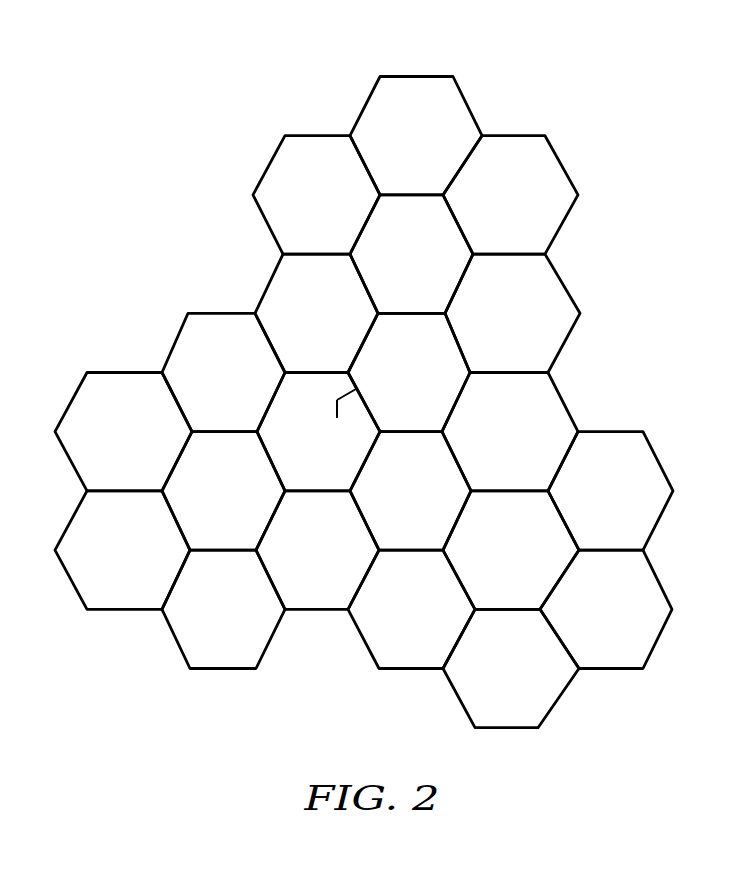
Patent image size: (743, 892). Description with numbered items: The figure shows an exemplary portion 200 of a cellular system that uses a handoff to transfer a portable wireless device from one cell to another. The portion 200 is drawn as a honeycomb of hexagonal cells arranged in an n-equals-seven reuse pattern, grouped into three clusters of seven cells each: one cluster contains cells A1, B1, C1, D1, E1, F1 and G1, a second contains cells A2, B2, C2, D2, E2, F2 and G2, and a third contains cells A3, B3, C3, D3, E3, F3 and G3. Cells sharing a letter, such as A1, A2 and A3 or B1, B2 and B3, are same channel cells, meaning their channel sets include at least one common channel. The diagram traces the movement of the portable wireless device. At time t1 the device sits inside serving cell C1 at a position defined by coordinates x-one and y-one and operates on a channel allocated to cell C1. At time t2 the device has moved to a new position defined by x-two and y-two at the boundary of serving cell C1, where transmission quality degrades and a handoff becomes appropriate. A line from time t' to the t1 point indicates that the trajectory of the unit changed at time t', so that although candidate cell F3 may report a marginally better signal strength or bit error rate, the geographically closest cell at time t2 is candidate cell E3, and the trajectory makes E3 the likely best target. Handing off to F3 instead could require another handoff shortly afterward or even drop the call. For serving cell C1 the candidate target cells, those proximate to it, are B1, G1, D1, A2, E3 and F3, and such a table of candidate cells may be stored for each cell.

The exemplary portion of a cellular system 200 is at (373, 383).
The time t' is at (239, 294).
The time t1 is at (319, 428).
The time t2 is at (402, 378).
The cell A1 is at (123, 432).
The cell B1 is at (223, 372).
The serving cell C1 is at (318, 432).
The cell D1 is at (317, 550).
The cell E1 is at (223, 609).
The cell F1 is at (122, 550).
The cell G1 is at (223, 491).
The cell A2 is at (410, 491).
The cell B2 is at (510, 432).
The cell C2 is at (610, 491).
The cell D2 is at (606, 609).
The cell E2 is at (511, 668).
The cell F2 is at (411, 609).
The cell G2 is at (511, 550).
The cell A3 is at (316, 195).
The cell B3 is at (416, 136).
The cell C3 is at (510, 195).
The cell D3 is at (512, 313).
The candidate cell E3 is at (409, 373).
The candidate cell F3 is at (316, 313).
The cell G3 is at (411, 254).